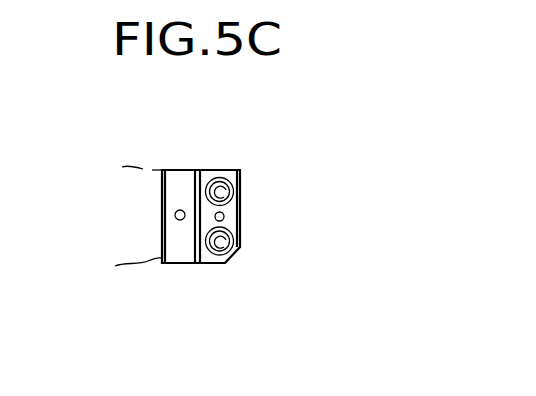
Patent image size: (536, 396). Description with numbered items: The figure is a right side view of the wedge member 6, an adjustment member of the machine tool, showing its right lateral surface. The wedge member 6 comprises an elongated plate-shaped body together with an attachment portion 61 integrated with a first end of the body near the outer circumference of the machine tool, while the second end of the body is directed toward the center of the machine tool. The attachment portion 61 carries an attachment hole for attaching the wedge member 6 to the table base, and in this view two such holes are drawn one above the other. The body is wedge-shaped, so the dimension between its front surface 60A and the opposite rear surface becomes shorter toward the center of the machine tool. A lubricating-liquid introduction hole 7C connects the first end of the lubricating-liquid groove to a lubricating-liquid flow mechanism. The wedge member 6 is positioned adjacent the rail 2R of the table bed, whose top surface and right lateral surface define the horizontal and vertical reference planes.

The wedge member 6 is at (192, 286).
The lubricating-liquid introduction hole 7C is at (180, 210).
The attachment portion 61 is at (232, 174).
The front surface 60A is at (162, 198).
The rail 2R is at (162, 238).